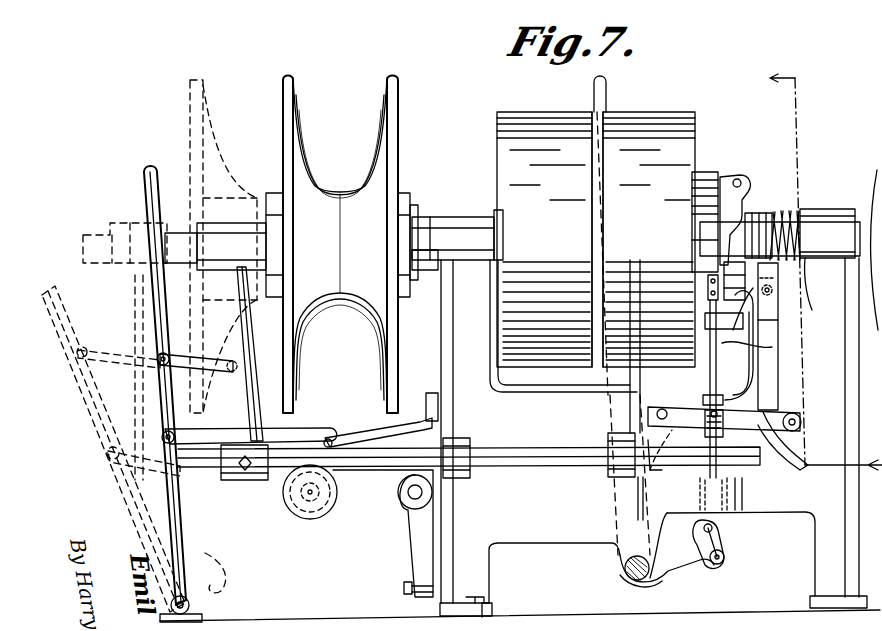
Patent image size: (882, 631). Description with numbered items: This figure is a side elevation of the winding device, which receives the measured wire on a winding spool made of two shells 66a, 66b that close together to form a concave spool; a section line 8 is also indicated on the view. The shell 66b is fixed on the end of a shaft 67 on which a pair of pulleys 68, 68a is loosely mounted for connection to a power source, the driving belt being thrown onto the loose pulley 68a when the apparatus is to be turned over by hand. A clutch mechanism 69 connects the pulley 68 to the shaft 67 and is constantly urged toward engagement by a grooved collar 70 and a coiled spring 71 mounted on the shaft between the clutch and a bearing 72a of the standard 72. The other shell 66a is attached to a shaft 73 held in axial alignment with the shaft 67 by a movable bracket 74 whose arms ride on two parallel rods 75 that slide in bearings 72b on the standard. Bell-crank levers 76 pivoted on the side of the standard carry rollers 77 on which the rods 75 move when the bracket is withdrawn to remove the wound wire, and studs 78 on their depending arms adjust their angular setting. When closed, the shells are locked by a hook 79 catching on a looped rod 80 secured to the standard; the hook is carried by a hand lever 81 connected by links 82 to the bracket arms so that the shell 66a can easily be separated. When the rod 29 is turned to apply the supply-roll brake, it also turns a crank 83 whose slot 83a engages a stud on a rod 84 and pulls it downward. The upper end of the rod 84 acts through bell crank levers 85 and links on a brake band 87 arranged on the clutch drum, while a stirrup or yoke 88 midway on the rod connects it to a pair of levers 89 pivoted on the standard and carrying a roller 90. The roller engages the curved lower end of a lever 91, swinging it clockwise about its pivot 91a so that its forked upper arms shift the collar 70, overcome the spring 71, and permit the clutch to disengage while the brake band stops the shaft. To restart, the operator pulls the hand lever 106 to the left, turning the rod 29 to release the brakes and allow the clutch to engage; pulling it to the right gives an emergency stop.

The section line 8 is at (816, 271).
The rod 29 is at (625, 571).
The shell 66a is at (303, 90).
The shell 66b is at (399, 92).
The shaft 67 is at (494, 220).
The pulley 68 is at (640, 112).
The pulley 68a is at (518, 112).
The clutch mechanism 69 is at (728, 175).
The grooved collar 70 is at (755, 213).
The coiled spring 71 is at (788, 212).
The standard 72 is at (530, 543).
The bearing 72a is at (816, 209).
The bearings 72b is at (455, 438).
The shaft 73 is at (175, 233).
The movable bracket 74 is at (246, 332).
The parallel rods 75 is at (525, 449).
The bell-crank levers 76 is at (370, 500).
The rollers 77 is at (288, 515).
The studs 78 is at (403, 586).
The hook 79 is at (312, 427).
The looped rod 80 is at (378, 427).
The hand lever 81 is at (144, 176).
The links 82 is at (188, 370).
The crank 83 is at (668, 574).
The slot 83a is at (726, 548).
The rod 84 is at (709, 376).
The bell crank levers 85 is at (772, 348).
The brake band 87 is at (704, 170).
The stirrup or yoke 88 is at (700, 425).
The levers 89 is at (726, 430).
The roller 90 is at (783, 430).
The lever 91 is at (775, 382).
The pivot 91a is at (772, 294).
The hand lever 106 is at (603, 86).